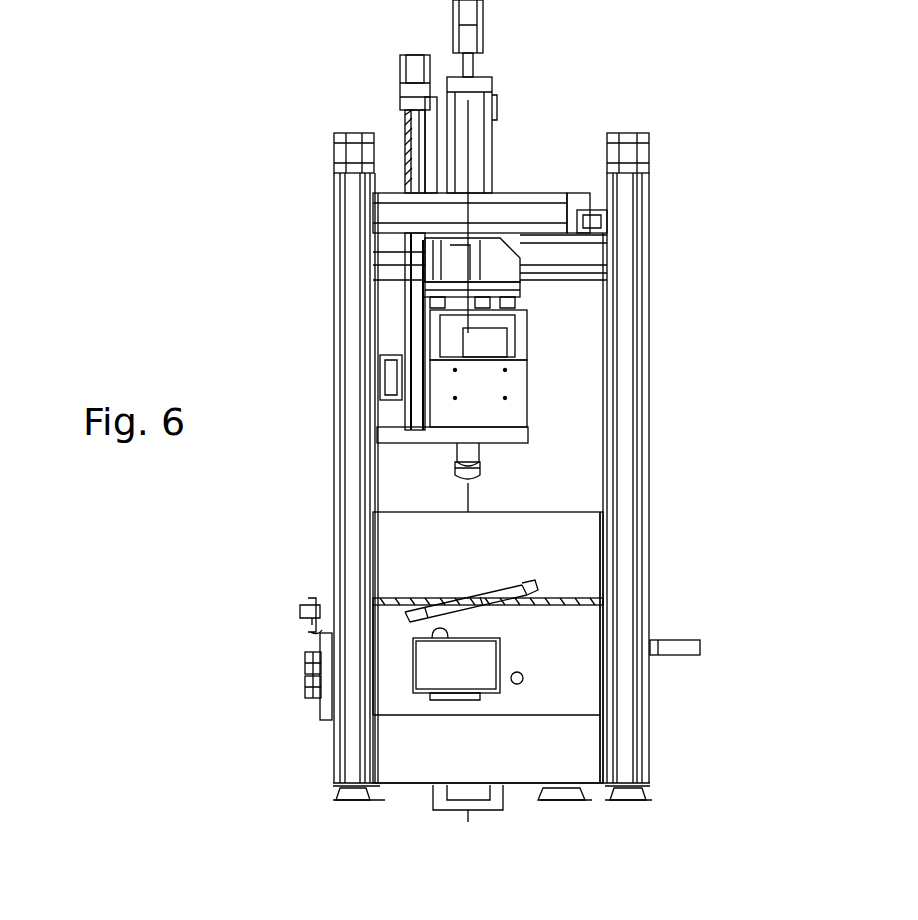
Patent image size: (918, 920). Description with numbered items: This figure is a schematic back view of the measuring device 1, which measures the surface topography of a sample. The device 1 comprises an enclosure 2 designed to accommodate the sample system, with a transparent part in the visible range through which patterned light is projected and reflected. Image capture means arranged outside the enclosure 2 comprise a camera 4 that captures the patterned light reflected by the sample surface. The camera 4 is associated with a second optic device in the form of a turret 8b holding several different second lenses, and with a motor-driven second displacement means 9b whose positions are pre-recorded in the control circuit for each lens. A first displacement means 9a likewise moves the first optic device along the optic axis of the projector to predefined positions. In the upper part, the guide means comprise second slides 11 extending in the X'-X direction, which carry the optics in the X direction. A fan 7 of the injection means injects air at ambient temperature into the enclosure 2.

The measuring device 1 is at (120, 240).
The enclosure 2 is at (598, 558).
The camera 4 is at (522, 252).
The fan 7 is at (452, 664).
The turret of second optic device 8b is at (457, 460).
The first displacement means 9a is at (407, 137).
The second displacement means 9b is at (487, 137).
The second slides 11 is at (410, 214).